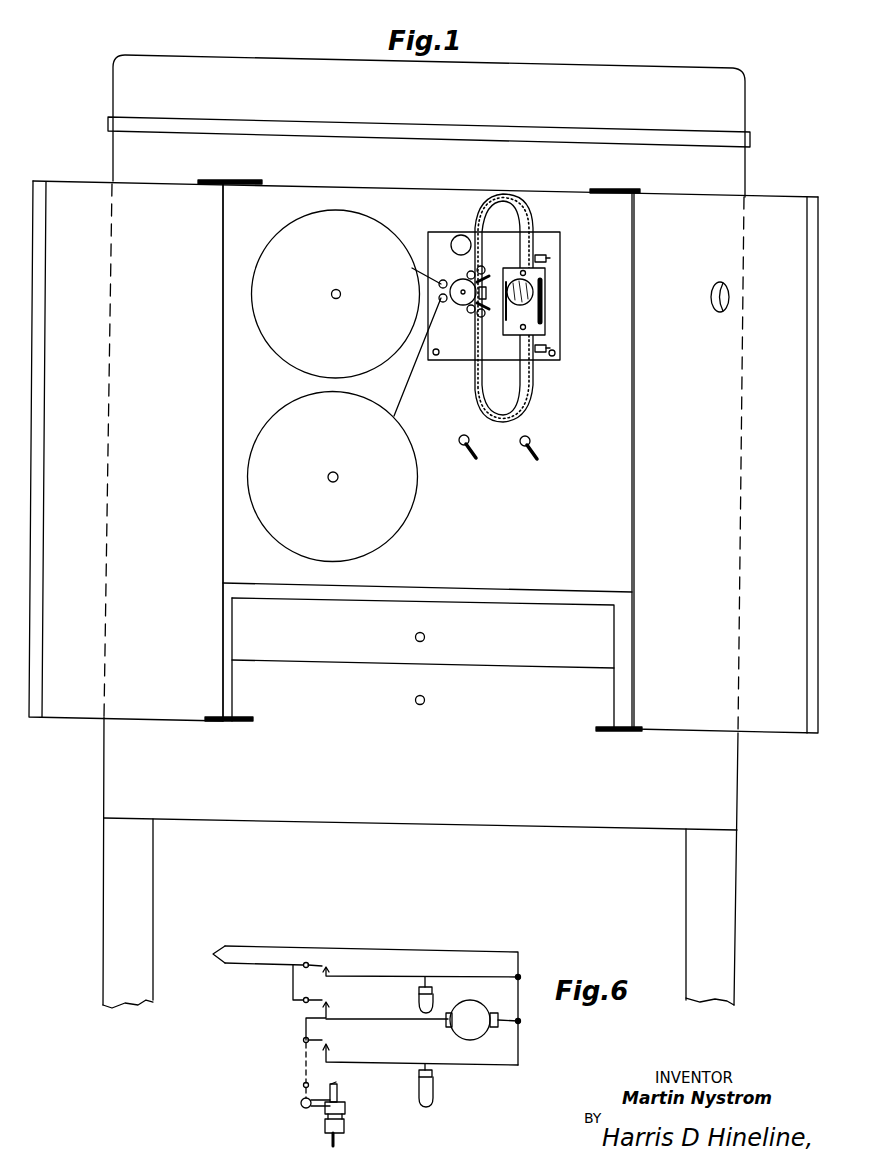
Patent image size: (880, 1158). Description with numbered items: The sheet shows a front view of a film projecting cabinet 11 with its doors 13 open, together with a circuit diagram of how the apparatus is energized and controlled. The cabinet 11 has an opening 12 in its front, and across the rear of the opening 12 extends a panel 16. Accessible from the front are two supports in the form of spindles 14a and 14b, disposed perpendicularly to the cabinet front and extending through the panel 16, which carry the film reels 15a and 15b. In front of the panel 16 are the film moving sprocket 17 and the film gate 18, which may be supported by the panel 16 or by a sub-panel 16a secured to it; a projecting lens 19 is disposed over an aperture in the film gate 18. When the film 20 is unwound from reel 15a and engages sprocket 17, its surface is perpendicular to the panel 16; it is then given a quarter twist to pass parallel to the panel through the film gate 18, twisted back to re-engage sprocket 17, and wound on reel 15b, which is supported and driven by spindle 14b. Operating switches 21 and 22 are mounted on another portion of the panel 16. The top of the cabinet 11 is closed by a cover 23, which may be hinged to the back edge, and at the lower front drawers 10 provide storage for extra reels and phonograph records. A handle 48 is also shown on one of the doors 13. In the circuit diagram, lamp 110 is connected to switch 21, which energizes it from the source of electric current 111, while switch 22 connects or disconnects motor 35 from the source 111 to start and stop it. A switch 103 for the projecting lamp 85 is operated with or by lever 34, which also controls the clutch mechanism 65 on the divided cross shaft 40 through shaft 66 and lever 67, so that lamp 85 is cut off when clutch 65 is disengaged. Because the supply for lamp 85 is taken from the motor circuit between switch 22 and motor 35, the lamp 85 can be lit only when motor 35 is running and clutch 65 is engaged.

In FIG. 1, the drawers 10 is at (570, 657).
In FIG. 1, the cabinet 11 is at (288, 822).
In FIG. 1, the opening 12 is at (442, 192).
In FIG. 1, the doors 13 is at (423, 446).
In FIG. 1, the support spindle 14a is at (340, 290).
In FIG. 1, the support spindle 14b is at (337, 472).
In FIG. 1, the film carrying reel 15a is at (272, 356).
In FIG. 1, the film carrying reel 15b is at (272, 542).
In FIG. 1, the panel 16 is at (427, 456).
In FIG. 1, the sub-panel 16a is at (549, 236).
In FIG. 1, the sprocket 17 is at (460, 306).
In FIG. 1, the film gate 18 is at (545, 271).
In FIG. 1, the projecting lens 19 is at (546, 308).
In FIG. 1, the film 20 is at (470, 390).
In FIG. 1, the switch 21 is at (470, 441).
In FIG. 6, the switch 21 is at (336, 961).
In FIG. 1, the switch 22 is at (531, 442).
In FIG. 6, the switch 22 is at (336, 995).
In FIG. 1, the cover 23 is at (640, 70).
In FIG. 1, the door handle 48 is at (716, 290).
In FIG. 6, the source of electric current 111 is at (357, 1005).
In FIG. 6, the lamp 110 is at (434, 1001).
In FIG. 6, the switch 103 is at (334, 1036).
In FIG. 6, the motor 35 is at (464, 1039).
In FIG. 6, the projecting lamp 85 is at (433, 1092).
In FIG. 6, the lever 34 is at (312, 1091).
In FIG. 6, the clutch mechanism 65 is at (345, 1116).
In FIG. 6, the shaft 66 is at (301, 1104).
In FIG. 6, the lever 67 is at (315, 1114).
In FIG. 6, the cross shaft 40 is at (337, 1141).